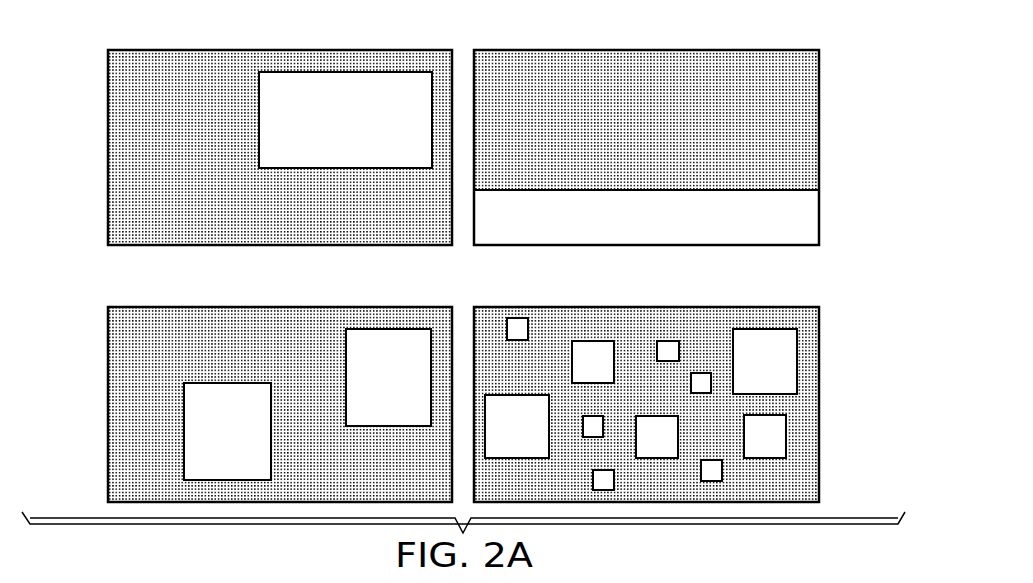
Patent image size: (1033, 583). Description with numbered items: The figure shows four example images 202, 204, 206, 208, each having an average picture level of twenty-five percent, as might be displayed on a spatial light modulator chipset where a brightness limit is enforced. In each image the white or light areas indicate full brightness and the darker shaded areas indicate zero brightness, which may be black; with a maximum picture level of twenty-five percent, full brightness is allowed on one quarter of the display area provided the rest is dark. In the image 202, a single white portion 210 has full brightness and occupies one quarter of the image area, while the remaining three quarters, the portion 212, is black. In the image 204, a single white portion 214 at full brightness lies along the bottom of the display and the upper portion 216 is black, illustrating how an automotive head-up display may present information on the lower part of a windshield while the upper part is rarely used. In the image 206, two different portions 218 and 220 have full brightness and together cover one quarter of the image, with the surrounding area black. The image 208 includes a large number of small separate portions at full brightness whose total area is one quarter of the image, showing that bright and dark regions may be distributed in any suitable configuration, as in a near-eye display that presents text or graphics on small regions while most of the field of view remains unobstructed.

The image 202 is at (240, 151).
The image 204 is at (687, 152).
The image 206 is at (240, 377).
The image 208 is at (828, 431).
The white portion 210 is at (348, 80).
The portion 212 is at (280, 233).
The white portion 214 is at (648, 237).
The portion 216 is at (647, 62).
The portion 218 is at (192, 434).
The portion 220 is at (388, 337).